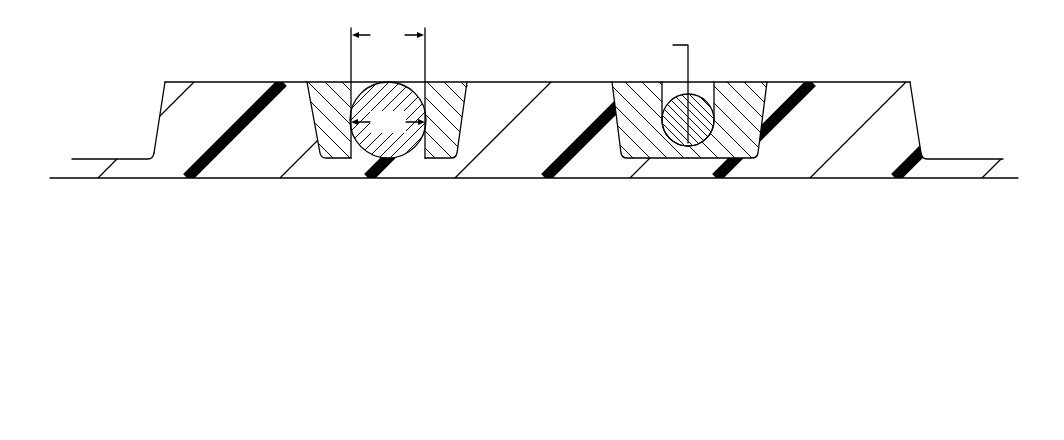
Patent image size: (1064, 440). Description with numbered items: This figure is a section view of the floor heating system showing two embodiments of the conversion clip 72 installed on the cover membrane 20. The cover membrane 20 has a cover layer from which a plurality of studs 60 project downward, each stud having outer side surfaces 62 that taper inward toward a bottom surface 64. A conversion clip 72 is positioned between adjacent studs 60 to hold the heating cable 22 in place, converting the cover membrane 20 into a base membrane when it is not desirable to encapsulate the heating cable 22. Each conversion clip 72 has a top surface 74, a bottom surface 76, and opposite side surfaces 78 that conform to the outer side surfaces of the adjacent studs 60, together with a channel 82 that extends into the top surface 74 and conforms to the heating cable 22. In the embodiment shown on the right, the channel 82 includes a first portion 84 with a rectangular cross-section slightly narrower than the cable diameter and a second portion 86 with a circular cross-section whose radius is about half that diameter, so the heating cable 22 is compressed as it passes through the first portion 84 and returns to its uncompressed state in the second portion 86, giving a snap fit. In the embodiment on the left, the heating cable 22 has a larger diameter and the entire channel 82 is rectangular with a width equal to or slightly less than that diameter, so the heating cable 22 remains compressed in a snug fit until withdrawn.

The cover membrane 20 is at (980, 102).
The heating cable 22 is at (367, 137).
The studs 60 is at (148, 64).
The outer side surfaces 62 is at (158, 118).
The bottom surface 64 is at (237, 82).
The conversion clip 72 is at (455, 62).
The top surface 74 is at (331, 82).
The bottom surface 76 is at (693, 138).
The side surfaces 78 is at (605, 127).
The channel 82 is at (418, 157).
The first portion 84 is at (663, 88).
The second portion 86 is at (693, 147).